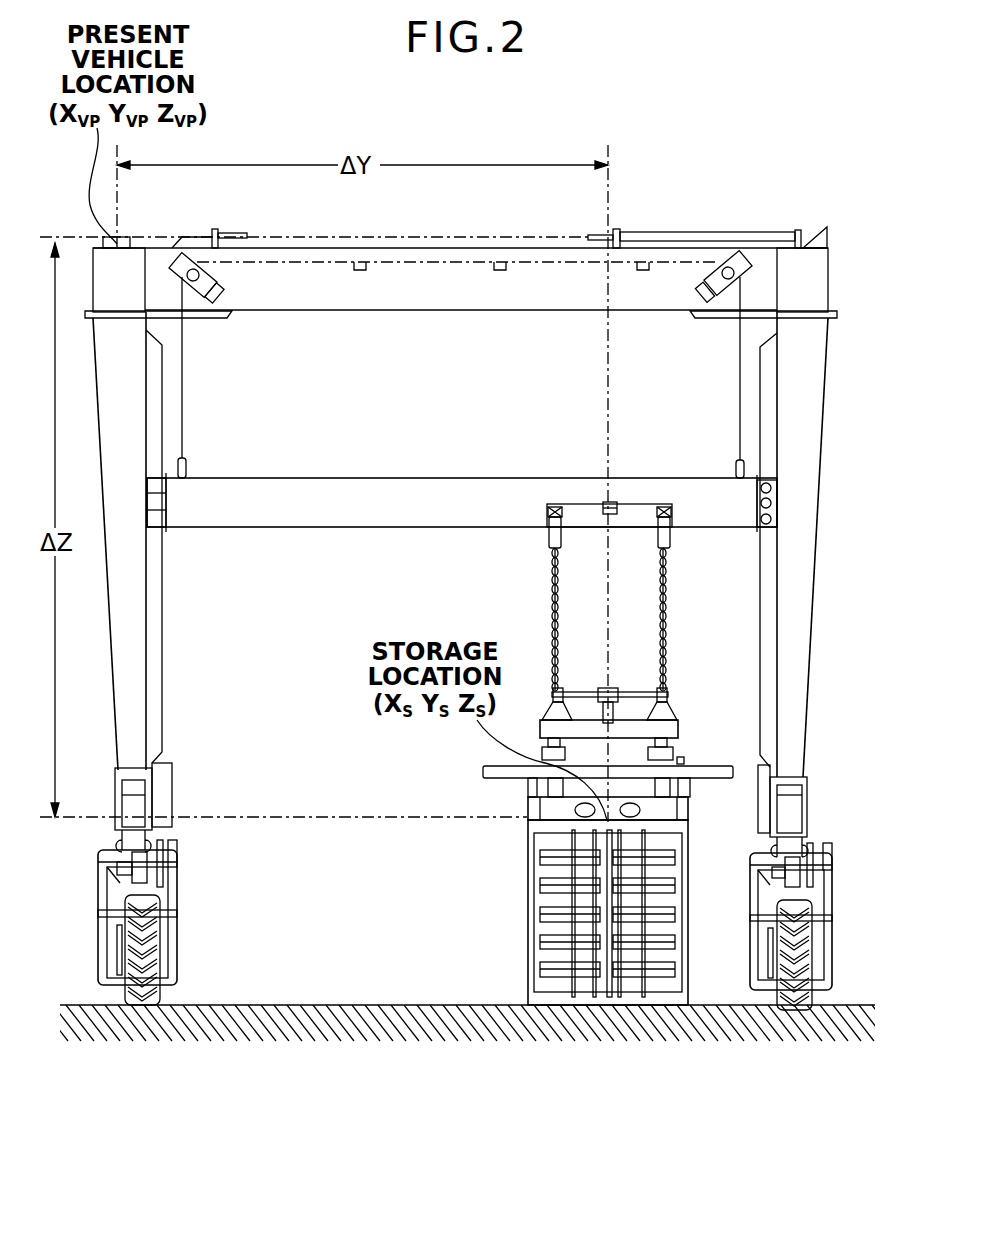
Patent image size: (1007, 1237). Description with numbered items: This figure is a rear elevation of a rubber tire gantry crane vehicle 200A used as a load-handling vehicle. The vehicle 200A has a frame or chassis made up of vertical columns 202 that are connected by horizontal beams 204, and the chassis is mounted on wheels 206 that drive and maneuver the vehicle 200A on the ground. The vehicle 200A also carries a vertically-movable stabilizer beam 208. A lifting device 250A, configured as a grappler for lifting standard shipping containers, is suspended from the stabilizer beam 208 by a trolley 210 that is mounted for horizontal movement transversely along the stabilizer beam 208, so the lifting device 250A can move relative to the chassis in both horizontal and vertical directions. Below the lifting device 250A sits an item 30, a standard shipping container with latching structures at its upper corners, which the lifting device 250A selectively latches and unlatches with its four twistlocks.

The gantry crane vehicle 200A is at (717, 150).
The vertical columns 202 is at (795, 388).
The horizontal beams 204 is at (422, 294).
The wheels 206 is at (152, 952).
The stabilizer beam 208 is at (312, 497).
The trolley 210 is at (583, 513).
The lifting device 250A is at (527, 805).
The item 30 is at (527, 924).